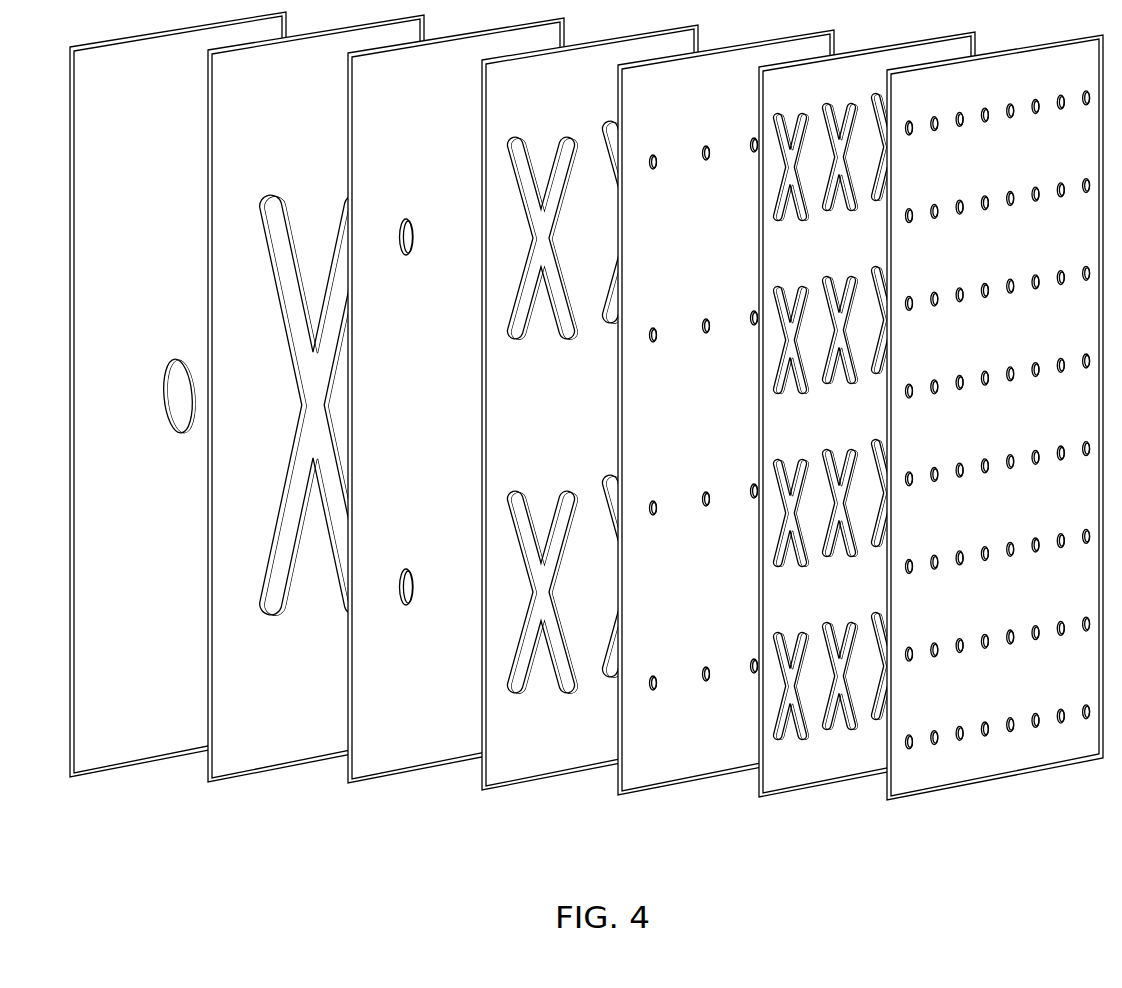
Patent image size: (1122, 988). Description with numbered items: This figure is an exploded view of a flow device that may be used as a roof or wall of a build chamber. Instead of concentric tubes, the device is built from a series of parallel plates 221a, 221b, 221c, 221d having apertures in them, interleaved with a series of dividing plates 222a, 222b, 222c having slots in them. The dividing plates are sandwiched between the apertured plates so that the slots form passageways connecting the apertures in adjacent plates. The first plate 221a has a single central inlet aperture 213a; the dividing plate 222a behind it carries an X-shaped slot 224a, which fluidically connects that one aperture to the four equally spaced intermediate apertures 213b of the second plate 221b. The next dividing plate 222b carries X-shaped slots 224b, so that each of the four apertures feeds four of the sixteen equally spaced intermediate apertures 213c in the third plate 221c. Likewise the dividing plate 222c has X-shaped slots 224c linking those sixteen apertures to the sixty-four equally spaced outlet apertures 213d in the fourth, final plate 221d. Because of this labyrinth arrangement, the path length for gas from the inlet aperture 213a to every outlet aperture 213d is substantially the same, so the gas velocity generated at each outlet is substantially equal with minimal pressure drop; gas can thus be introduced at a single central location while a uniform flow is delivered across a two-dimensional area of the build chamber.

The first plate 221a is at (178, 438).
The dividing plate 222a is at (316, 439).
The second plate 221b is at (456, 441).
The dividing plate 222b is at (590, 444).
The third plate 221c is at (726, 447).
The dividing plate 222c is at (867, 448).
The fourth plate 221d is at (995, 449).
The inlet aperture 213a is at (164, 448).
The slot 224a is at (268, 647).
The intermediate apertures 213b is at (406, 626).
The slots 224b is at (535, 707).
The intermediate apertures 213c is at (665, 707).
The slots 224c is at (808, 767).
The outlet apertures 213d is at (938, 758).